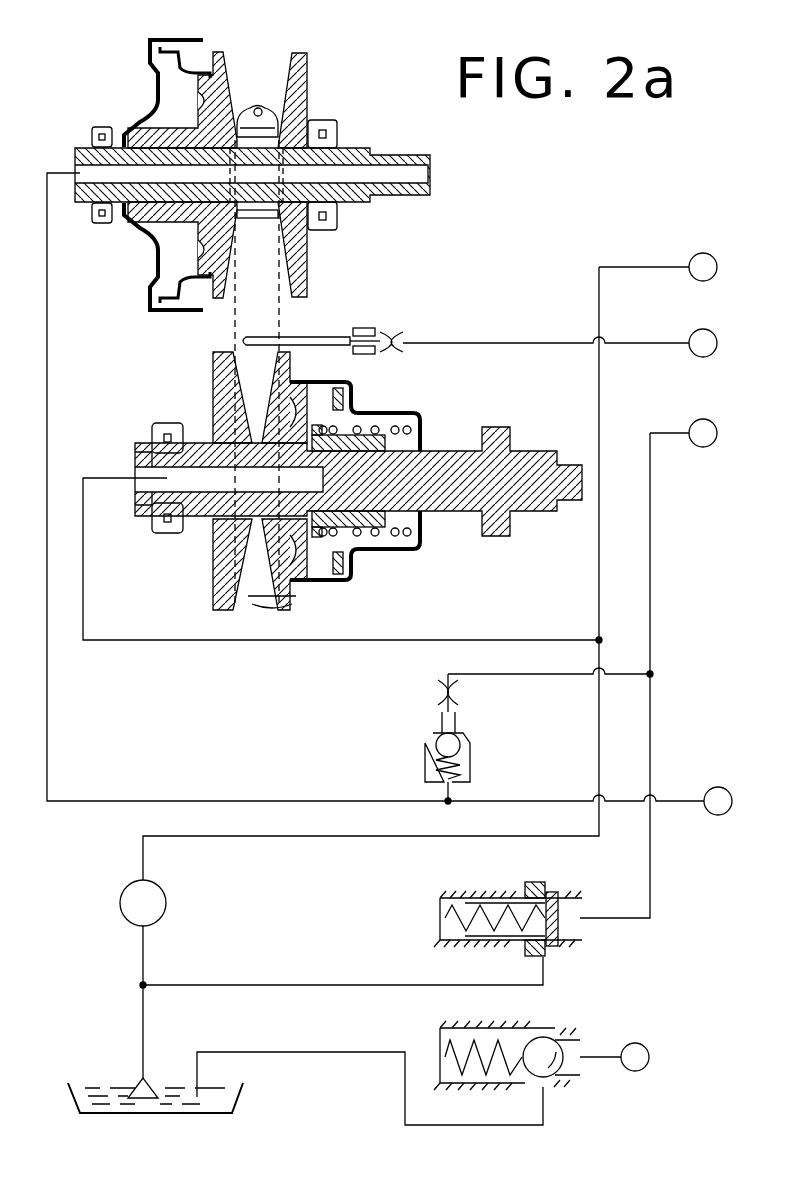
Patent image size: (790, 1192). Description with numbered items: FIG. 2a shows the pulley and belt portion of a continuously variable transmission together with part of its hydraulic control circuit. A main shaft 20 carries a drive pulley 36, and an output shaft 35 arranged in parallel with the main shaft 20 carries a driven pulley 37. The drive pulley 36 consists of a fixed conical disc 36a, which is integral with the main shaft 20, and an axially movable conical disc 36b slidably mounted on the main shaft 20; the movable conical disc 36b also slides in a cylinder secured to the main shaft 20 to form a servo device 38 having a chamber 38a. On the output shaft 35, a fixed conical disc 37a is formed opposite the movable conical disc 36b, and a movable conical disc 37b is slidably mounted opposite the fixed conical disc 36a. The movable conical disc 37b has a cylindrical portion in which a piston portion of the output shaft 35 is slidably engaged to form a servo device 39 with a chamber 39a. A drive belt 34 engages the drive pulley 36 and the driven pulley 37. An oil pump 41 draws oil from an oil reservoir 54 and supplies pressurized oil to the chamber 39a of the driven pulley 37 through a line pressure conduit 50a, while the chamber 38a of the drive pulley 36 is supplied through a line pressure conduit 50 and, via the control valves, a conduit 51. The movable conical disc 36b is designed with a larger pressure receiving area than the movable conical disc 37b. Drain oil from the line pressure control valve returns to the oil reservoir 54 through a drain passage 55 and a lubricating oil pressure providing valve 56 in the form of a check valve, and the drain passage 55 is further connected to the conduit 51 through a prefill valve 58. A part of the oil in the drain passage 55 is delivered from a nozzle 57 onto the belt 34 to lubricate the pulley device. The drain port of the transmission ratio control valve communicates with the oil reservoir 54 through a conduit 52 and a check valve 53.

The main shaft 20 is at (357, 148).
The drive belt 34 is at (268, 110).
The output shaft 35 is at (507, 473).
The drive pulley 36 is at (249, 154).
The fixed conical disc 36a is at (308, 90).
The movable conical disc 36b is at (217, 50).
The driven pulley 37 is at (239, 491).
The fixed conical disc 37a is at (227, 567).
The movable conical disc 37b is at (287, 600).
The servo device 38 is at (154, 160).
The chamber 38a is at (167, 91).
The servo device 39 is at (362, 383).
The chamber 39a is at (393, 533).
The oil pump 41 is at (167, 918).
The line pressure conduit 50 is at (613, 267).
The line pressure conduit 50a is at (468, 640).
The conduit 51 is at (673, 802).
The conduit 52 is at (592, 1047).
The check valve 53 is at (508, 1010).
The oil reservoir 54 is at (235, 1110).
The drain passage 55 is at (652, 883).
The lubricating oil pressure providing valve 56 is at (495, 895).
The nozzle 57 is at (310, 337).
The prefill valve 58 is at (472, 767).